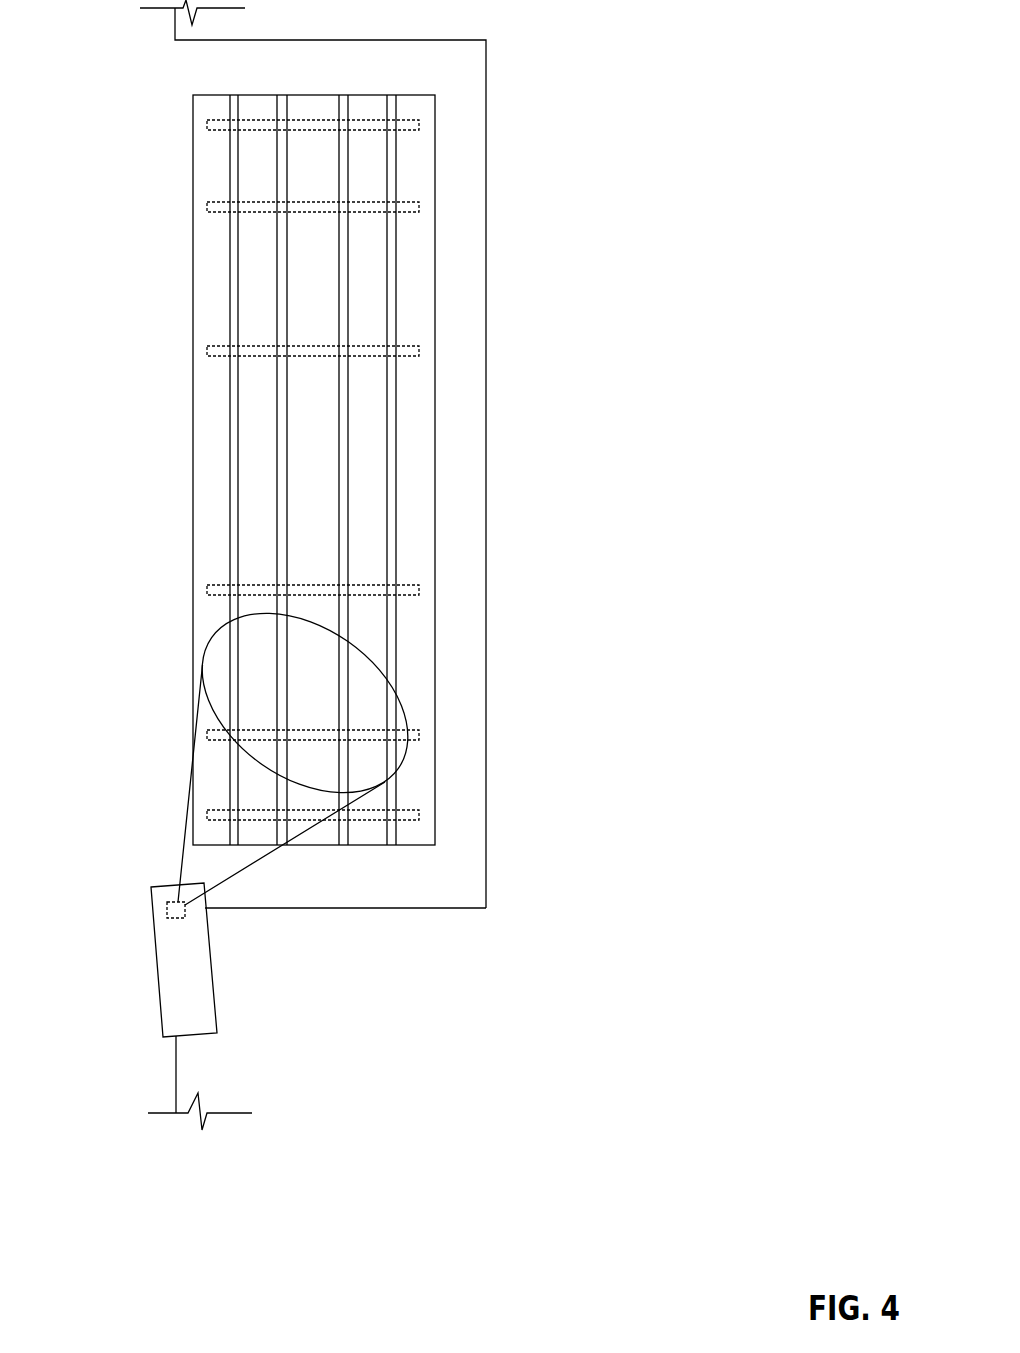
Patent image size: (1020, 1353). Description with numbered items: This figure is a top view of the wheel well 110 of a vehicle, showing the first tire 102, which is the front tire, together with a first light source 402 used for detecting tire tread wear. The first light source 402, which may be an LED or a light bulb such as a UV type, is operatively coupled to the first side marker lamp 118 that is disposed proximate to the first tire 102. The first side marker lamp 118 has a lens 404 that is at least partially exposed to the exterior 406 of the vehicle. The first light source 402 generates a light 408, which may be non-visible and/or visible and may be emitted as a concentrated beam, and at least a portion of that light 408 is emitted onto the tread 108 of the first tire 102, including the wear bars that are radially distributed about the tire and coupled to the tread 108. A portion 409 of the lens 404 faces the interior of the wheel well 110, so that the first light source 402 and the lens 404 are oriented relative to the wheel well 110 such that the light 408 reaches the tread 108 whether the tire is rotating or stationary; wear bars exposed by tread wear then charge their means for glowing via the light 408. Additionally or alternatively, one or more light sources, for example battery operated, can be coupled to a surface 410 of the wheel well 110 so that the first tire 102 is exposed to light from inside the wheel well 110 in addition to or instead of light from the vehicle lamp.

The first tire 102 is at (150, 78).
The tread 108 is at (205, 435).
The wheel well 110 is at (469, 63).
The first side marker lamp 118 is at (110, 910).
The first light source 402 is at (177, 918).
The lens 404 is at (160, 1005).
The exterior 406 is at (175, 1095).
The light 408 is at (210, 755).
The portion of the lens 409 is at (175, 900).
The surface of the wheel well 410 is at (255, 908).